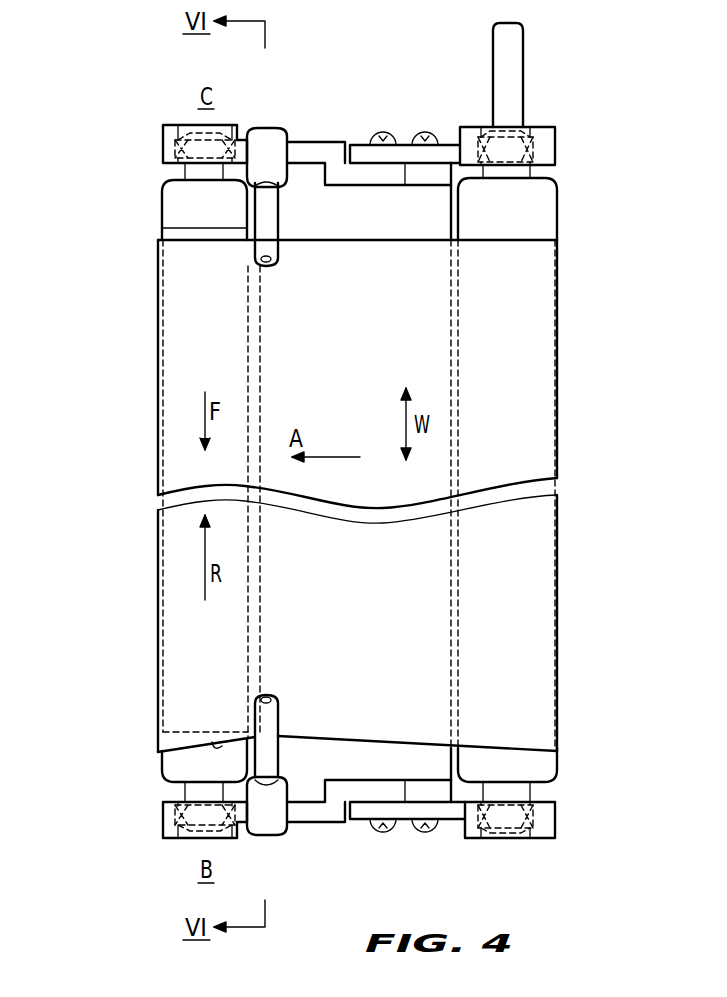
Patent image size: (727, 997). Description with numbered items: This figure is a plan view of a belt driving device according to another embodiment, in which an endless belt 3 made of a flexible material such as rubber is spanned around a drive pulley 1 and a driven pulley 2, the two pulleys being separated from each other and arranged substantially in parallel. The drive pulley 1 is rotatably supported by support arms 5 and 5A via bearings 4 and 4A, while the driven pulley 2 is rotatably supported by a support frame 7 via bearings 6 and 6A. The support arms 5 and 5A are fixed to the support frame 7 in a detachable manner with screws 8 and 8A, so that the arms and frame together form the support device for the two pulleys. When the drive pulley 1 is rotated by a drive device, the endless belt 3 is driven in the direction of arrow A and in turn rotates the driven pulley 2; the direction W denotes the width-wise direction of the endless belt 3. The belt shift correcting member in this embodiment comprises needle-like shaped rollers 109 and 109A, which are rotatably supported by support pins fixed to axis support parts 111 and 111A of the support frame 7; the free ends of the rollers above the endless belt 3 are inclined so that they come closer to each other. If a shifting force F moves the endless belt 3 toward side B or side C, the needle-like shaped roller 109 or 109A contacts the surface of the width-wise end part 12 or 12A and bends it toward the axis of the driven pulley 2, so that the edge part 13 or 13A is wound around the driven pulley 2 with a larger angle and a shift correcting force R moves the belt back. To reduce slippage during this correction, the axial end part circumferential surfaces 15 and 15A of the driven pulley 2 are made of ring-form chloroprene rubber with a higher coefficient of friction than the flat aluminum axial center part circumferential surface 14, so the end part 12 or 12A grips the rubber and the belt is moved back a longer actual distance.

The drive pulley 1 is at (558, 218).
The driven pulley 2 is at (158, 334).
The endless belt 3 is at (560, 380).
The bearing 4 is at (537, 814).
The bearing 4A is at (547, 150).
The support arm 5 is at (445, 822).
The support arm 5A is at (445, 148).
The bearing 6 is at (170, 828).
The bearing 6A is at (180, 140).
The support frame 7 is at (341, 145).
The screw 8 is at (425, 830).
The screw 8A is at (425, 135).
The width-wise end part 12 is at (228, 748).
The width-wise end part 12A is at (175, 262).
The edge part 13 is at (212, 742).
The edge part 13A is at (195, 240).
The axial center part circumferential surface 14 is at (158, 458).
The axial end part circumferential surface 15 is at (165, 770).
The axial end part circumferential surface 15A is at (165, 203).
The needle-like shaped roller 109 is at (280, 718).
The needle-like shaped roller 109A is at (276, 223).
The axis support part 111 is at (262, 822).
The axis support part 111A is at (293, 143).